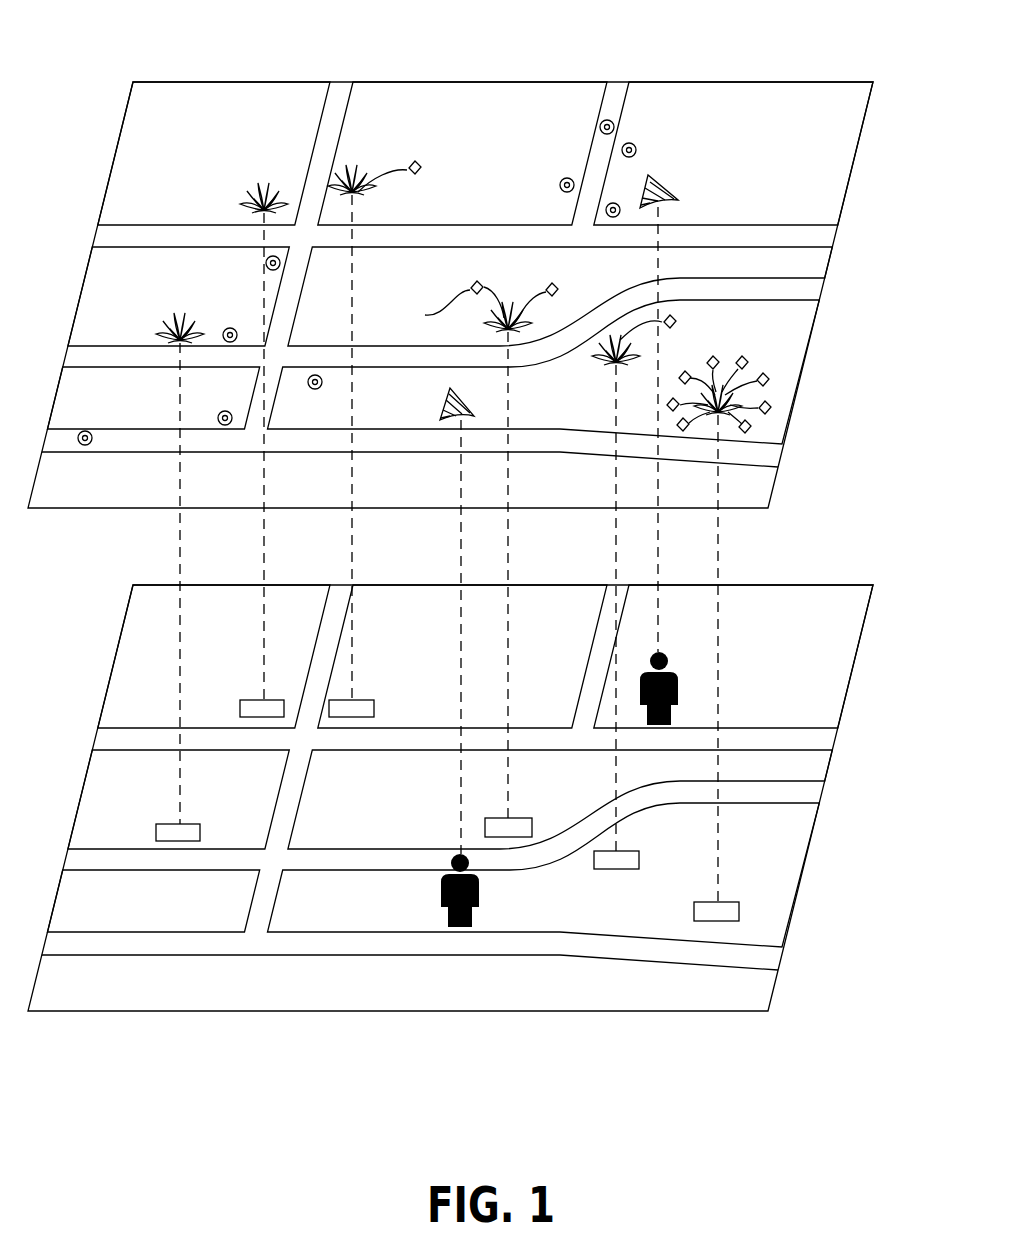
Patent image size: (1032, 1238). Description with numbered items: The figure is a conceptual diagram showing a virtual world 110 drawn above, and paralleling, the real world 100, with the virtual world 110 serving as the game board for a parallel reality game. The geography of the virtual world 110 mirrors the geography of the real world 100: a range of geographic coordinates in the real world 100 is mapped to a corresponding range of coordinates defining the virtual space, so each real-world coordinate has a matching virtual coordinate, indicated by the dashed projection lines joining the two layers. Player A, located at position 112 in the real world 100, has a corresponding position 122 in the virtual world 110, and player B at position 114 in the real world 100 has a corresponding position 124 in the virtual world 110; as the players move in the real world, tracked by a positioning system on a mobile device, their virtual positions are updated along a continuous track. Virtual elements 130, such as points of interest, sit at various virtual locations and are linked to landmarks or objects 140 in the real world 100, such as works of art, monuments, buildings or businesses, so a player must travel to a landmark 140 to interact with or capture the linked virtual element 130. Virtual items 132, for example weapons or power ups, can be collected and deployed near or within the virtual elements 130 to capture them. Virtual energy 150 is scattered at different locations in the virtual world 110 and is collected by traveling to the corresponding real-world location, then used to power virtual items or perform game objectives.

The real world 100 is at (850, 670).
The virtual world 110 is at (842, 203).
The position of player A in the real world 112 is at (441, 898).
The position of player B in the real world 114 is at (678, 679).
The position of player A in the virtual world 122 is at (478, 413).
The position of player B in the virtual world 124 is at (676, 200).
The virtual elements 130 is at (268, 188).
The virtual items 132 is at (424, 165).
The real-world landmarks or objects 140 is at (256, 699).
The virtual energy 150 is at (637, 148).